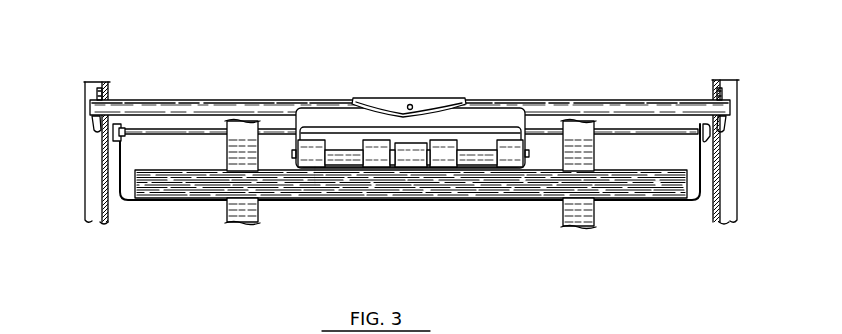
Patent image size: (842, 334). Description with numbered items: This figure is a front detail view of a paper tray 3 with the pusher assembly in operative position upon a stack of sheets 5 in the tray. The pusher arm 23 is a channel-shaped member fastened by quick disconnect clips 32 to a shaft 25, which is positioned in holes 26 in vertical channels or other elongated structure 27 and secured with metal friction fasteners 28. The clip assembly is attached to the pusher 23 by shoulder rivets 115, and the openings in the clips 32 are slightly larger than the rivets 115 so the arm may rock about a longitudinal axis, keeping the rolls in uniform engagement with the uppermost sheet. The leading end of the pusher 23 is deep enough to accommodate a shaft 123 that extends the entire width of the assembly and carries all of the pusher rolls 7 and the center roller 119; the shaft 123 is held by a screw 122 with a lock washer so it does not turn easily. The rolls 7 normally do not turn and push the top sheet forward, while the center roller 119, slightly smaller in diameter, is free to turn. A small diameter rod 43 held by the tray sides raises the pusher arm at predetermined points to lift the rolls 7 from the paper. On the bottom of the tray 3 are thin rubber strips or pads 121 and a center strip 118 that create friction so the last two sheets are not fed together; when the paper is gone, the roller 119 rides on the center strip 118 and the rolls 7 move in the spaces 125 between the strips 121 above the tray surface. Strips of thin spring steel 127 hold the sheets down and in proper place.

The paper tray 3 is at (665, 201).
The cable bundle 5 is at (158, 186).
The pusher rolls 7 is at (315, 166).
The pusher arm 23 is at (315, 118).
The shaft 25 is at (563, 100).
The hole 26 is at (108, 100).
The vertical channel 27 is at (100, 84).
The metal friction fastener 28 is at (96, 96).
The quick disconnect clip 32 is at (375, 95).
The rod 43 is at (628, 129).
The shoulder rivet 115 is at (413, 106).
The center rubber strip 118 is at (410, 200).
The center roller 119 is at (410, 148).
The rubber strip 121 is at (284, 202).
The screw 122 is at (530, 152).
The shaft 123 is at (480, 150).
The spaces 125 is at (308, 199).
The spring steel strip 127 is at (240, 131).